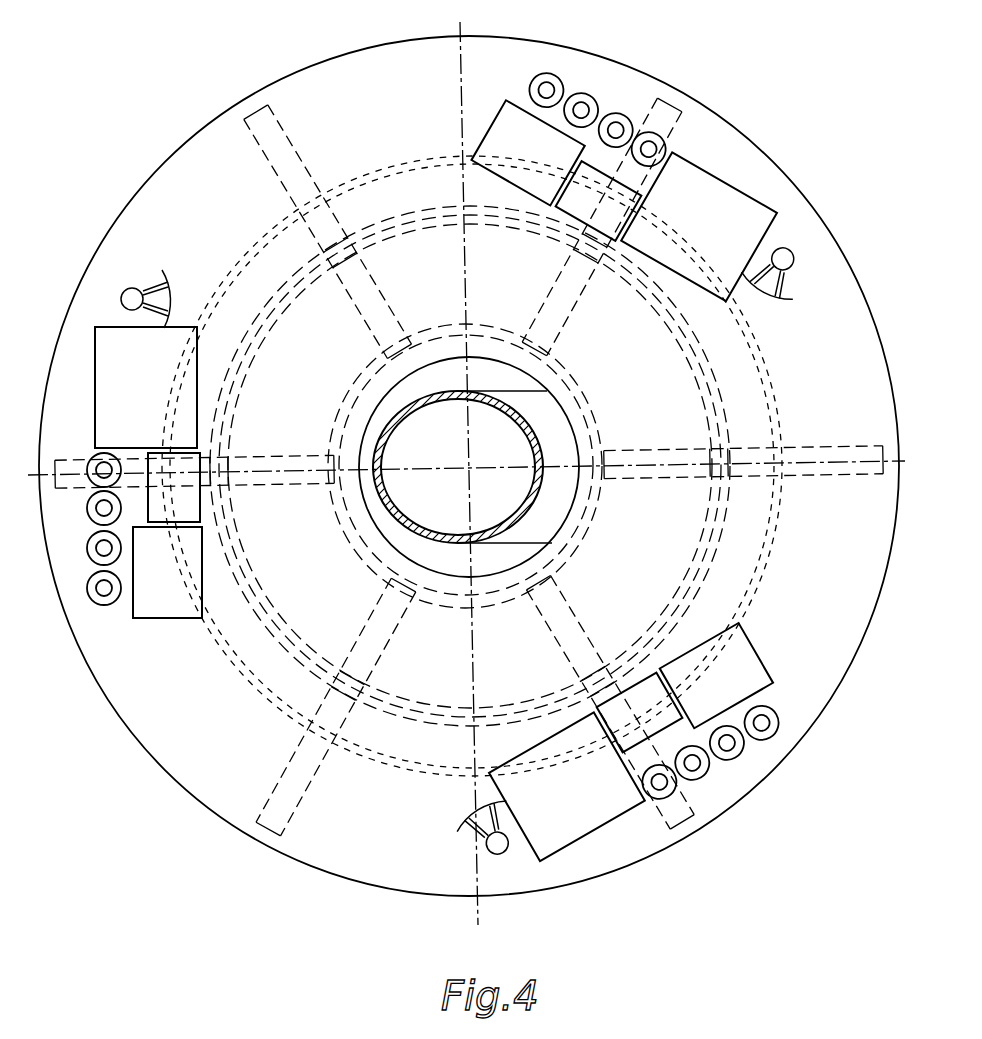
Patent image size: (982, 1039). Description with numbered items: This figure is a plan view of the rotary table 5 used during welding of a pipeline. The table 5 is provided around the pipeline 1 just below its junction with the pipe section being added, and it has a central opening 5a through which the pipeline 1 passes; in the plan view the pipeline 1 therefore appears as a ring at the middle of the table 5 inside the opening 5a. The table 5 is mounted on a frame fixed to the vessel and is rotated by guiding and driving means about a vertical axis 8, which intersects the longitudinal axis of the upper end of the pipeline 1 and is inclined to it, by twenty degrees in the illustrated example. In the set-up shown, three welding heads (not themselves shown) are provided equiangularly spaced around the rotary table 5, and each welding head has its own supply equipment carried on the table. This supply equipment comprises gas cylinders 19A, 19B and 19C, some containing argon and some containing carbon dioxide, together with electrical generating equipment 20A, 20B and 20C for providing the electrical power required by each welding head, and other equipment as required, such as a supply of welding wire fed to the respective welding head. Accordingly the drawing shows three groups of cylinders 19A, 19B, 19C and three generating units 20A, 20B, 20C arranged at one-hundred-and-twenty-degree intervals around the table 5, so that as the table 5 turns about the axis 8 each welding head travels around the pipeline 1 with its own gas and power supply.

The pipeline 1 is at (522, 415).
The rotary table 5 is at (347, 117).
The central opening 5a is at (568, 434).
The vertical axis 8 is at (467, 470).
The gas cylinders 19A is at (88, 507).
The gas cylinders 19B is at (585, 90).
The gas cylinders 19C is at (735, 758).
The electrical generating equipment 20A is at (165, 603).
The electrical generating equipment 20B is at (494, 131).
The electrical generating equipment 20C is at (746, 676).